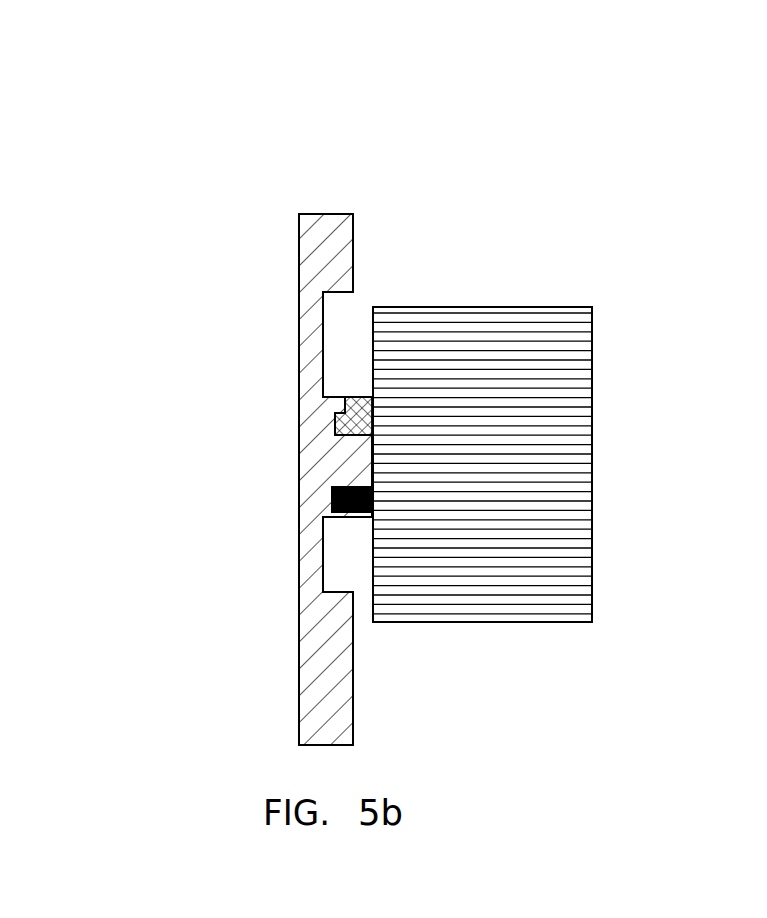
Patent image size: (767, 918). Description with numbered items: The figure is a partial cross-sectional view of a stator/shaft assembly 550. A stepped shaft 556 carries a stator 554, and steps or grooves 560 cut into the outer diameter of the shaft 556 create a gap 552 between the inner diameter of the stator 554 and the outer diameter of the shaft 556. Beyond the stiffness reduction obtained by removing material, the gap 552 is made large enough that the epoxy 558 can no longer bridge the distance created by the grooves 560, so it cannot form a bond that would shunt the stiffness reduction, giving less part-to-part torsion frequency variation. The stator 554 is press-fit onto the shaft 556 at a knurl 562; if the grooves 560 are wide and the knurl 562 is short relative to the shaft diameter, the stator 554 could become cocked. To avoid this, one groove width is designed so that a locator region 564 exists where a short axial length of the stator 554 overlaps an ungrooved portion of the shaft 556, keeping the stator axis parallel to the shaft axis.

The stator/shaft assembly 550 is at (438, 397).
The gap 552 is at (348, 352).
The stator 554 is at (523, 417).
The shaft 556 is at (332, 242).
The epoxy 558 is at (330, 402).
The grooves 560 is at (320, 301).
The knurl 562 is at (355, 469).
The locator region 564 is at (358, 580).